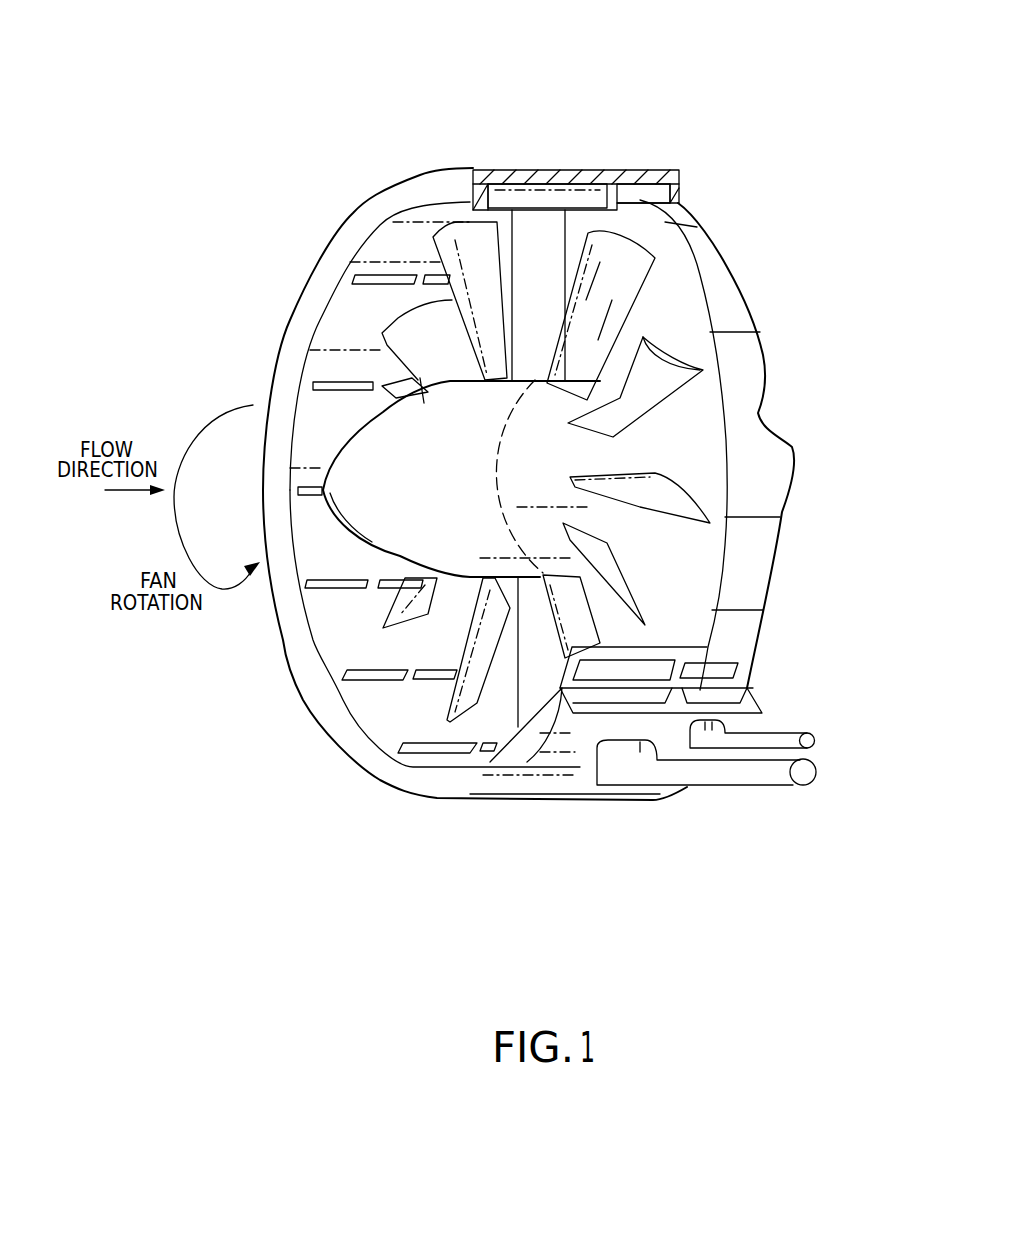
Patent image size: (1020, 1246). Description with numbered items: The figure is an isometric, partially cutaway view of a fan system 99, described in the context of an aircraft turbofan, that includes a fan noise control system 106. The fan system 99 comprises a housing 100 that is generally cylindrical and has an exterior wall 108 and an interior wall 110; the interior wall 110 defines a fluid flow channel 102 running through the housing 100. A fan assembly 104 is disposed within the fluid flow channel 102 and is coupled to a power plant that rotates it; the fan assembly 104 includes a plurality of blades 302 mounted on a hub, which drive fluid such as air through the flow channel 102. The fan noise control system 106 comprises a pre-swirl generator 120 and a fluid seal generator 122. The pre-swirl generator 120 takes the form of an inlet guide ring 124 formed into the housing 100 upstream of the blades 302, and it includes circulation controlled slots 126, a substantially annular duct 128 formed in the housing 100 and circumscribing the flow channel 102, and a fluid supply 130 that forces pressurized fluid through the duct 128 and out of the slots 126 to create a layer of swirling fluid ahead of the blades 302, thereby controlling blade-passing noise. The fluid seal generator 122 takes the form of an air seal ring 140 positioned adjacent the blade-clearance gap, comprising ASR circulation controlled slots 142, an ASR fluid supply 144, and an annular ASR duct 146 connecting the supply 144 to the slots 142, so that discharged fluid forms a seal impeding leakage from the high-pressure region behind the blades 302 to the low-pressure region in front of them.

The fan system 99 is at (337, 100).
The housing 100 is at (466, 112).
The fluid flow channel 102 is at (328, 324).
The fan assembly 104 is at (418, 382).
The fan noise control system 106 is at (803, 716).
The exterior wall 108 is at (320, 257).
The interior wall 110 is at (750, 352).
The pre-swirl generator 120 is at (255, 402).
The fluid seal generator 122 is at (645, 172).
The inlet guide ring 124 is at (350, 672).
The circulation controlled slots 126 is at (653, 660).
The duct 128 is at (595, 697).
The fluid supply 130 is at (780, 781).
The air seal ring 140 is at (487, 748).
The ASR circulation controlled slots 142 is at (717, 665).
The ASR fluid supply 144 is at (814, 741).
The ASR duct 146 is at (725, 697).
The blades 302 is at (633, 272).